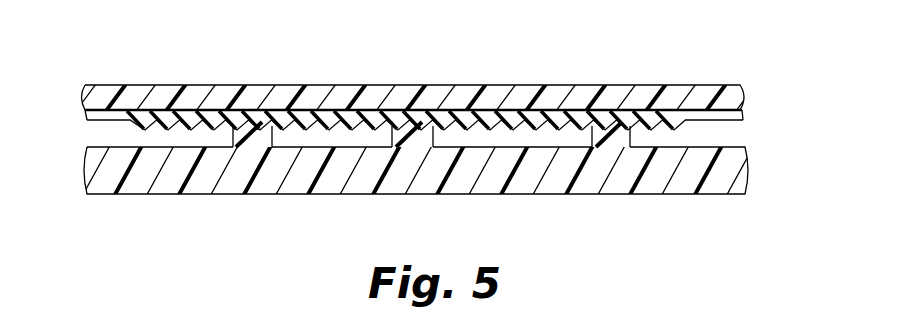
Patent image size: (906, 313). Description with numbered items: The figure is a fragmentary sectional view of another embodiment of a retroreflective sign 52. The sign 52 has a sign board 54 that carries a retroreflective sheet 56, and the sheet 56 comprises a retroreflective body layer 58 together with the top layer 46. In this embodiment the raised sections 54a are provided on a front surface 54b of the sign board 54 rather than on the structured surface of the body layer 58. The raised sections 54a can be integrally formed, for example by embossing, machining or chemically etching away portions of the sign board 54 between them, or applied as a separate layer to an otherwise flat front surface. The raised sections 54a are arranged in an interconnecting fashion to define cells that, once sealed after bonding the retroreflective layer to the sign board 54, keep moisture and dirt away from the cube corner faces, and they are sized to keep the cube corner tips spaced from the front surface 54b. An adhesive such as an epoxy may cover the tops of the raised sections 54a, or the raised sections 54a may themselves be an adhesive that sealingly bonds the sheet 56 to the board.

The retroreflective sign 52 is at (692, 60).
The top layer 46 is at (495, 93).
The sign board 54 is at (488, 195).
The raised sections 54a is at (255, 137).
The front surface 54b is at (172, 143).
The retroreflective sheet 56 is at (78, 85).
The retroreflective body layer 58 is at (742, 115).